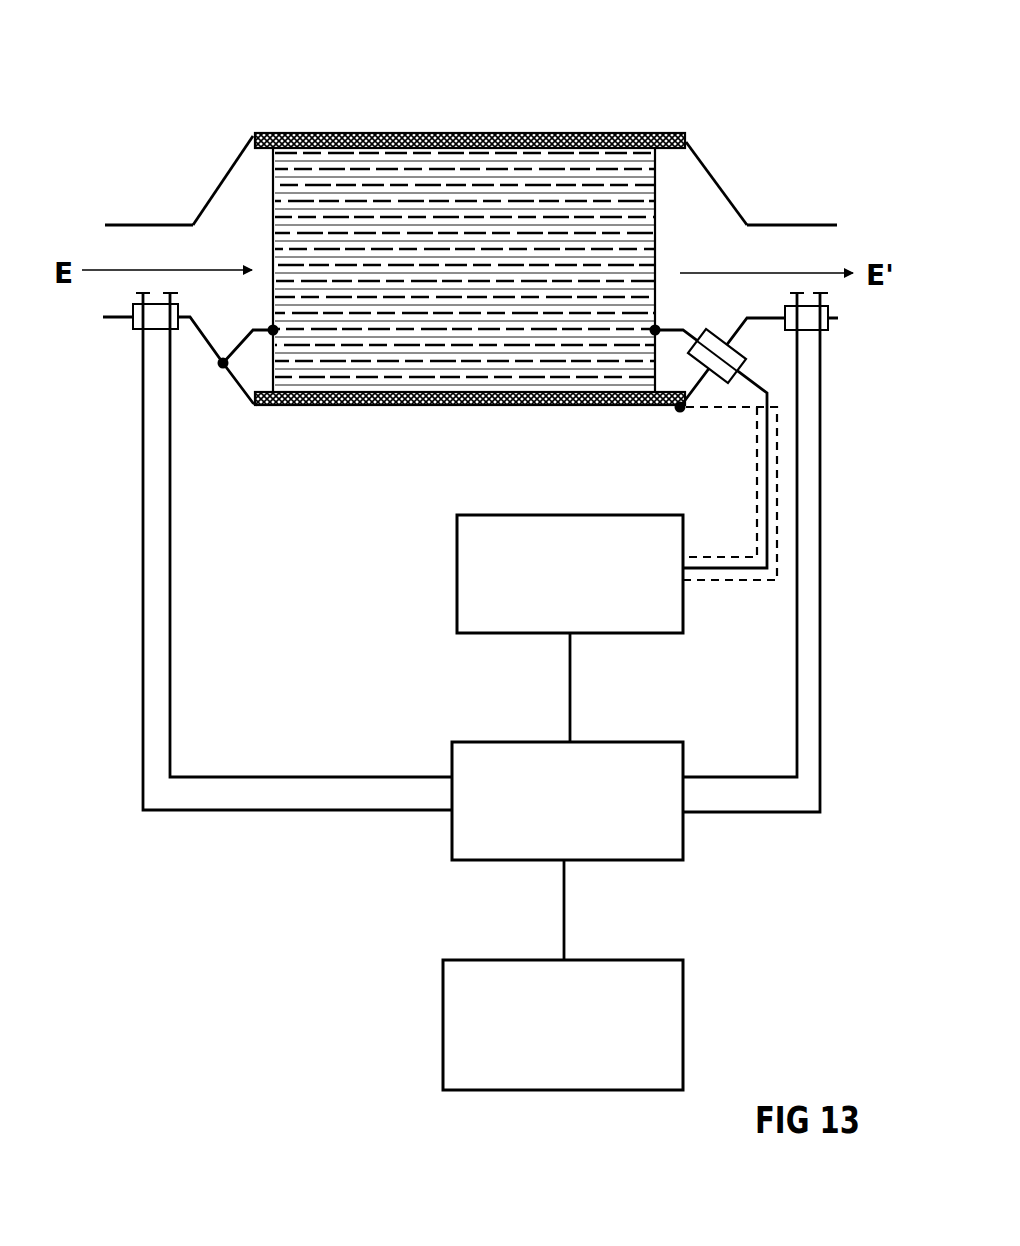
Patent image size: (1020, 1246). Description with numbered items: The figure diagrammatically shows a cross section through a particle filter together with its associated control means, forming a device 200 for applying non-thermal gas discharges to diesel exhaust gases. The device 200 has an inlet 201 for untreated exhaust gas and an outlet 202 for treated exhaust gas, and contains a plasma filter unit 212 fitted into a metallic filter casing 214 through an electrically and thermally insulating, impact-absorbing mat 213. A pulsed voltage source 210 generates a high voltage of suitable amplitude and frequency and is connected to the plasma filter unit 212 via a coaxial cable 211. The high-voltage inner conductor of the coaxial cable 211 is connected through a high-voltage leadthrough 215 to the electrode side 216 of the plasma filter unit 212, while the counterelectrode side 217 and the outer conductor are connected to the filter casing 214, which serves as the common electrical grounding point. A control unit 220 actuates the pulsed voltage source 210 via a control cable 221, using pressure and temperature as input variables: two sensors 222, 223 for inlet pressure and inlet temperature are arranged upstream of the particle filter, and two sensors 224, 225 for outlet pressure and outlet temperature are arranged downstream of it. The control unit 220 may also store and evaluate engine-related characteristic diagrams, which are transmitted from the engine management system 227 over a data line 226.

The device for applying non-thermal gas discharges to diesel exhaust gases 200 is at (736, 130).
The inlet 201 is at (150, 240).
The outlet 202 is at (790, 250).
The pulsed voltage source 210 is at (457, 560).
The coaxial cable 211 is at (767, 485).
The plasma filter unit 212 is at (490, 175).
The electrically and thermally insulating, impact-absorbing mat 213 is at (355, 133).
The metallic filter casing 214 is at (228, 168).
The high-voltage leadthrough 215 is at (722, 375).
The electrode side 216 is at (656, 330).
The counterelectrode side 217 is at (273, 330).
The control unit 220 is at (472, 742).
The control cable 221 is at (570, 688).
The sensor 222 is at (820, 580).
The sensor 223 is at (797, 740).
The sensor 224 is at (170, 648).
The sensor 225 is at (143, 535).
The data line 226 is at (563, 915).
The engine management system 227 is at (443, 1026).